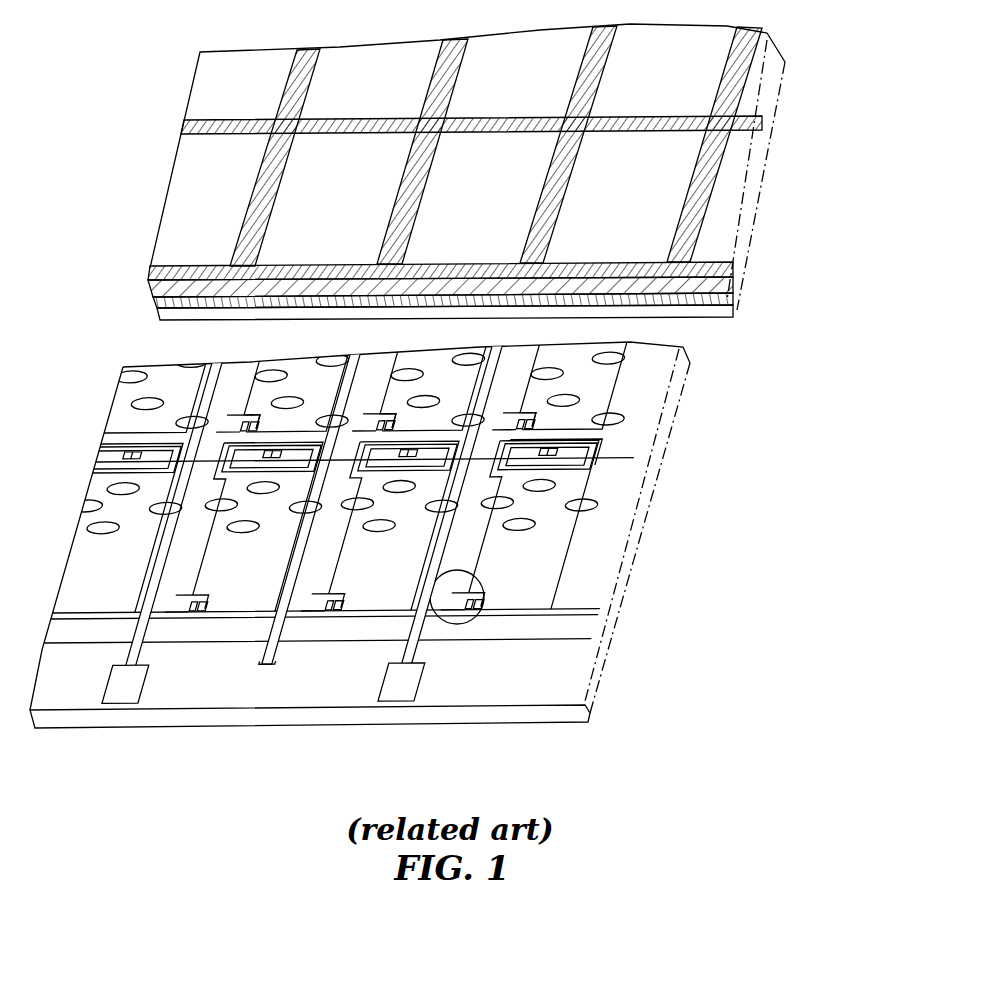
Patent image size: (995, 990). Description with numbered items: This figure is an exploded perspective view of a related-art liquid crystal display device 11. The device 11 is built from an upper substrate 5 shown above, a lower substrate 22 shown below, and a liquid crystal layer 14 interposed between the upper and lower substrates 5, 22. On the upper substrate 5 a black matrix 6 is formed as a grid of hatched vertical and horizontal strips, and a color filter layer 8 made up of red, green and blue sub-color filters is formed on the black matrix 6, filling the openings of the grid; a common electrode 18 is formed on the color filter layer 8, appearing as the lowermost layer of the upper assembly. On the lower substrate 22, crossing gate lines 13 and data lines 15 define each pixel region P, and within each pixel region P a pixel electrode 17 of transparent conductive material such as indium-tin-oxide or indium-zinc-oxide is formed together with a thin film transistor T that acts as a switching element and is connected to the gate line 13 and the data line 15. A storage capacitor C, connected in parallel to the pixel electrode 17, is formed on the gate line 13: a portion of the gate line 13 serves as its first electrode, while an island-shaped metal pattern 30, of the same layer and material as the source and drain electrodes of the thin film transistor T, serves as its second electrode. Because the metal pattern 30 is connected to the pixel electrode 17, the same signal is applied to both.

The upper substrate 5 is at (157, 292).
The black matrix 6 is at (762, 122).
The color filter layer 8 is at (705, 82).
The common electrode 18 is at (717, 310).
The liquid crystal display device 11 is at (770, 575).
The gate line 13 is at (560, 622).
The data line 15 is at (402, 652).
The pixel electrode 17 is at (560, 585).
The liquid crystal layer 14 is at (611, 400).
The metal pattern 30 is at (597, 450).
The lower substrate 22 is at (550, 713).
The storage capacitor C is at (597, 473).
The pixel region P is at (603, 542).
The thin film transistor T is at (473, 615).